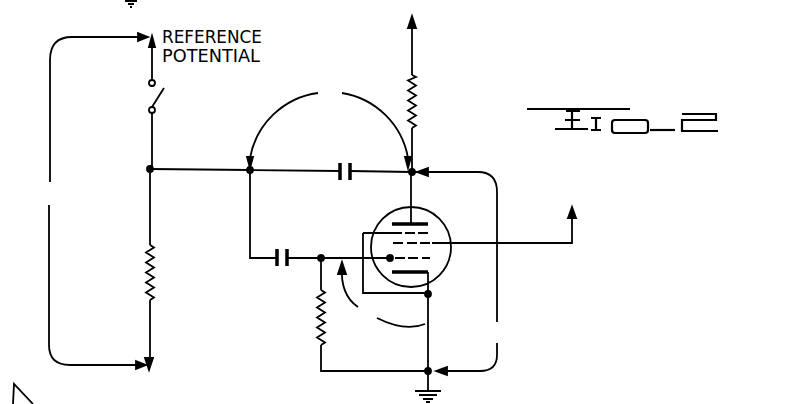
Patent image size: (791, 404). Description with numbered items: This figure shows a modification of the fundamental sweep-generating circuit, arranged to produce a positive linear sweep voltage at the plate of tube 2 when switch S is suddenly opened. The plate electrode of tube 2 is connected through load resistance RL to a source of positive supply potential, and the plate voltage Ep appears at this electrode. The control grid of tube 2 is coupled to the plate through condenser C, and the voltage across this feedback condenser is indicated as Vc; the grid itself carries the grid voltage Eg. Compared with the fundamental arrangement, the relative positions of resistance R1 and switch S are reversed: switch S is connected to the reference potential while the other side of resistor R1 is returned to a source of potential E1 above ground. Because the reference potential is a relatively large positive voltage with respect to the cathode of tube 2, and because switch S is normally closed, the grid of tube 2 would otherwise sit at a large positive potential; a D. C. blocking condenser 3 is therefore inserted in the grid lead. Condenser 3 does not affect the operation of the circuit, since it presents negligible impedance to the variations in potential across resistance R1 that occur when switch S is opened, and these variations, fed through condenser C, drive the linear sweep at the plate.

The tube 2 is at (443, 272).
The D. C. blocking condenser 3 is at (283, 272).
The switch S is at (146, 74).
The condenser C is at (281, 161).
The resistor R1 is at (160, 307).
The load resistance RL is at (424, 90).
The source of potential E1 is at (104, 204).
The plate voltage Ep is at (456, 271).
The grid voltage Eg is at (372, 314).
The condenser voltage Vc is at (329, 127).